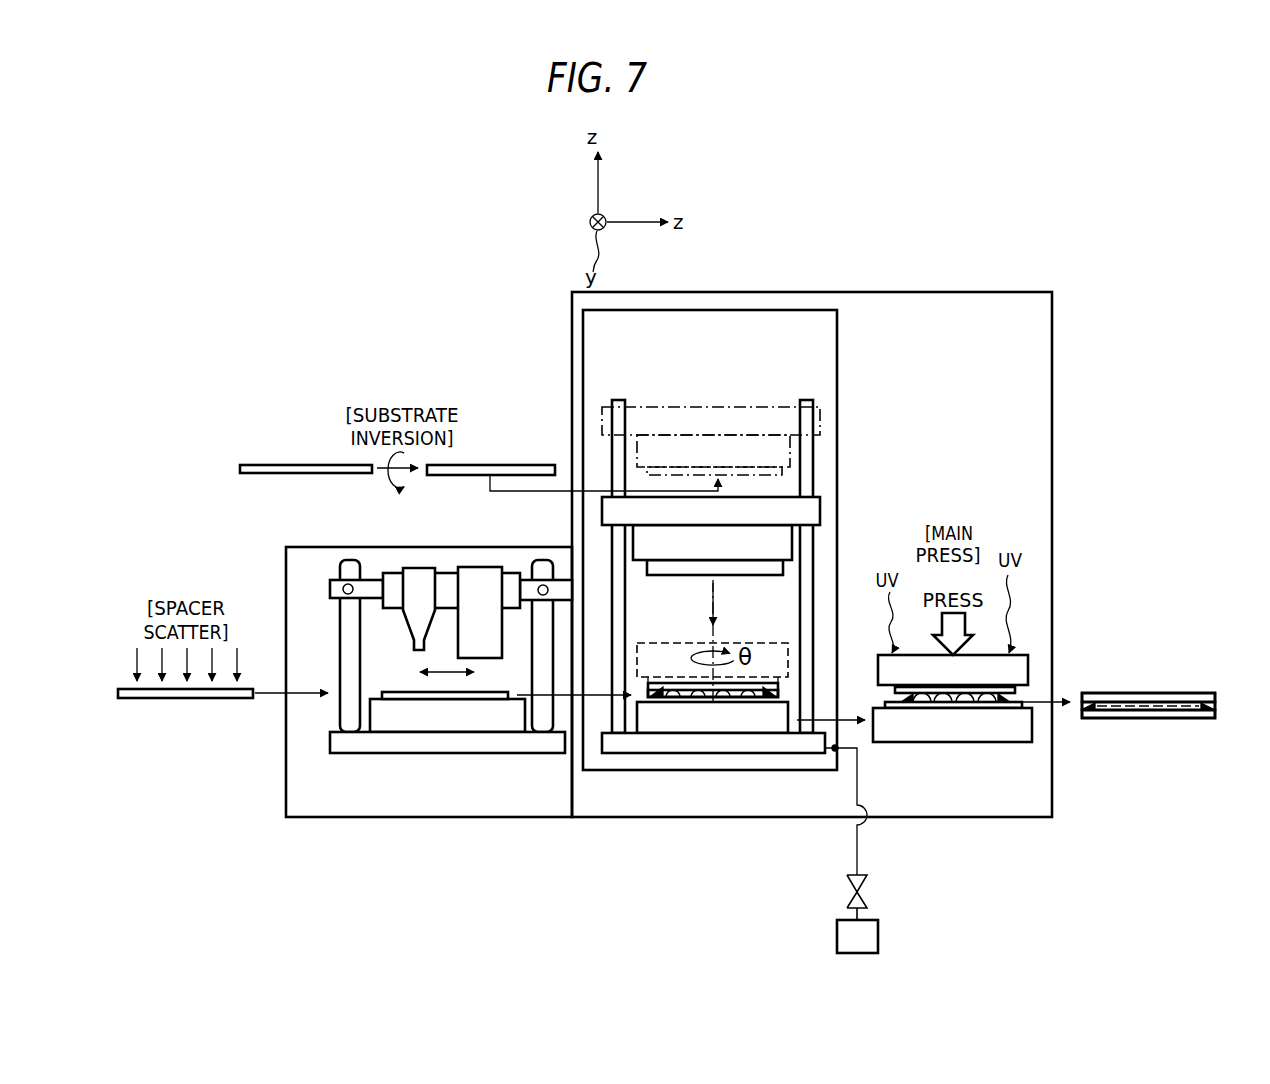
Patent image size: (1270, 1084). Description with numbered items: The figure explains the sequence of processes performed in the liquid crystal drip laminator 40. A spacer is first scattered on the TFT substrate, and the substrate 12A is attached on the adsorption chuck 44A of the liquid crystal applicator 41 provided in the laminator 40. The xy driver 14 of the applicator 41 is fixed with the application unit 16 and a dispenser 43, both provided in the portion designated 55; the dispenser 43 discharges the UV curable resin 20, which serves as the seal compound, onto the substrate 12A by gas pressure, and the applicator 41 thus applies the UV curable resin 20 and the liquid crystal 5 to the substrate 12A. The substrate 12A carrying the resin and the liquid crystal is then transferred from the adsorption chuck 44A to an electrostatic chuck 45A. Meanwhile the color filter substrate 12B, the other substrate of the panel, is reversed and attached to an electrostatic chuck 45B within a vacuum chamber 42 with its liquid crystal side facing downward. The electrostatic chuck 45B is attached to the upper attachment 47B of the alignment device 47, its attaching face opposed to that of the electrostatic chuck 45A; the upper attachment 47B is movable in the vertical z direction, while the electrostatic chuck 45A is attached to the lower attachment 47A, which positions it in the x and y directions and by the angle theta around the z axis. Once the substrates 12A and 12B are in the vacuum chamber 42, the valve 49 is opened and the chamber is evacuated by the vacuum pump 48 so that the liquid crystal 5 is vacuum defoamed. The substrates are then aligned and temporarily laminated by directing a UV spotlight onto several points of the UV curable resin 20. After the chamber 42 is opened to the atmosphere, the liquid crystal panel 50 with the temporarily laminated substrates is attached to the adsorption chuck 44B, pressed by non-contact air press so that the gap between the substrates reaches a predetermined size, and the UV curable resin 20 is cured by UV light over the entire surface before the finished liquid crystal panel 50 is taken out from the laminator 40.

The liquid crystal 5 is at (747, 685).
The substrate 12A is at (183, 700).
The color filter substrate 12B is at (303, 465).
The xy driver 14 is at (340, 743).
The application unit 16 is at (480, 585).
The UV curable resin 20 is at (662, 685).
The liquid crystal drip laminator 40 is at (1053, 385).
The liquid crystal applicator 41 is at (326, 573).
The vacuum chamber 42 is at (837, 405).
The dispenser 43 is at (415, 568).
The adsorption chuck 44A is at (380, 714).
The adsorption chuck 44B is at (992, 732).
The electrostatic chuck 45A is at (735, 722).
The electrostatic chuck 45B is at (792, 447).
The alignment device 47 is at (819, 397).
The lower attachment 47A is at (797, 743).
The upper attachment 47B is at (800, 510).
The vacuum pump 48 is at (878, 933).
The valve 49 is at (865, 882).
The liquid crystal panel 50 is at (1134, 685).
The portion 55 is at (449, 570).